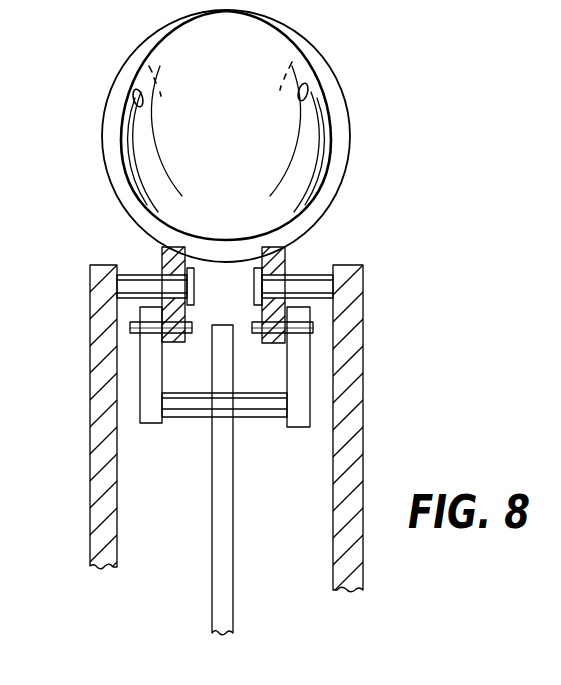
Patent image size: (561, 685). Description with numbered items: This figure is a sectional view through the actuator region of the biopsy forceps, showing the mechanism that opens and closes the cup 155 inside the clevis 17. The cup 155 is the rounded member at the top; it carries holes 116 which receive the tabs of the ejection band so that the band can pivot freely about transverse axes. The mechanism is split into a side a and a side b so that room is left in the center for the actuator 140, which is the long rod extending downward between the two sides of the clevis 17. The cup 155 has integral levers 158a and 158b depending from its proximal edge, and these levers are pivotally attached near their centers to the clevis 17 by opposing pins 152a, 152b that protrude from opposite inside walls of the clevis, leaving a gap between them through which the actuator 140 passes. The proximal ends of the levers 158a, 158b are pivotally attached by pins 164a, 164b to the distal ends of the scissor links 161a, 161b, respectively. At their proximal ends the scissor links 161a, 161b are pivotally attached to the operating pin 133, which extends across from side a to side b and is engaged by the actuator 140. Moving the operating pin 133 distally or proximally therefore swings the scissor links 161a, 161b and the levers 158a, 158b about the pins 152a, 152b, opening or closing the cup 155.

The cup 155 is at (322, 62).
The holes 116 is at (133, 93).
The clevis 17 is at (346, 430).
The lever 158b is at (164, 254).
The lever 158a is at (285, 257).
The pin 152b is at (134, 276).
The pin 152a is at (334, 310).
The pin 164b is at (130, 328).
The pin 164a is at (313, 328).
The scissor link 161b is at (145, 388).
The scissor link 161a is at (302, 370).
The operating pin 133 is at (263, 420).
The actuator 140 is at (228, 507).